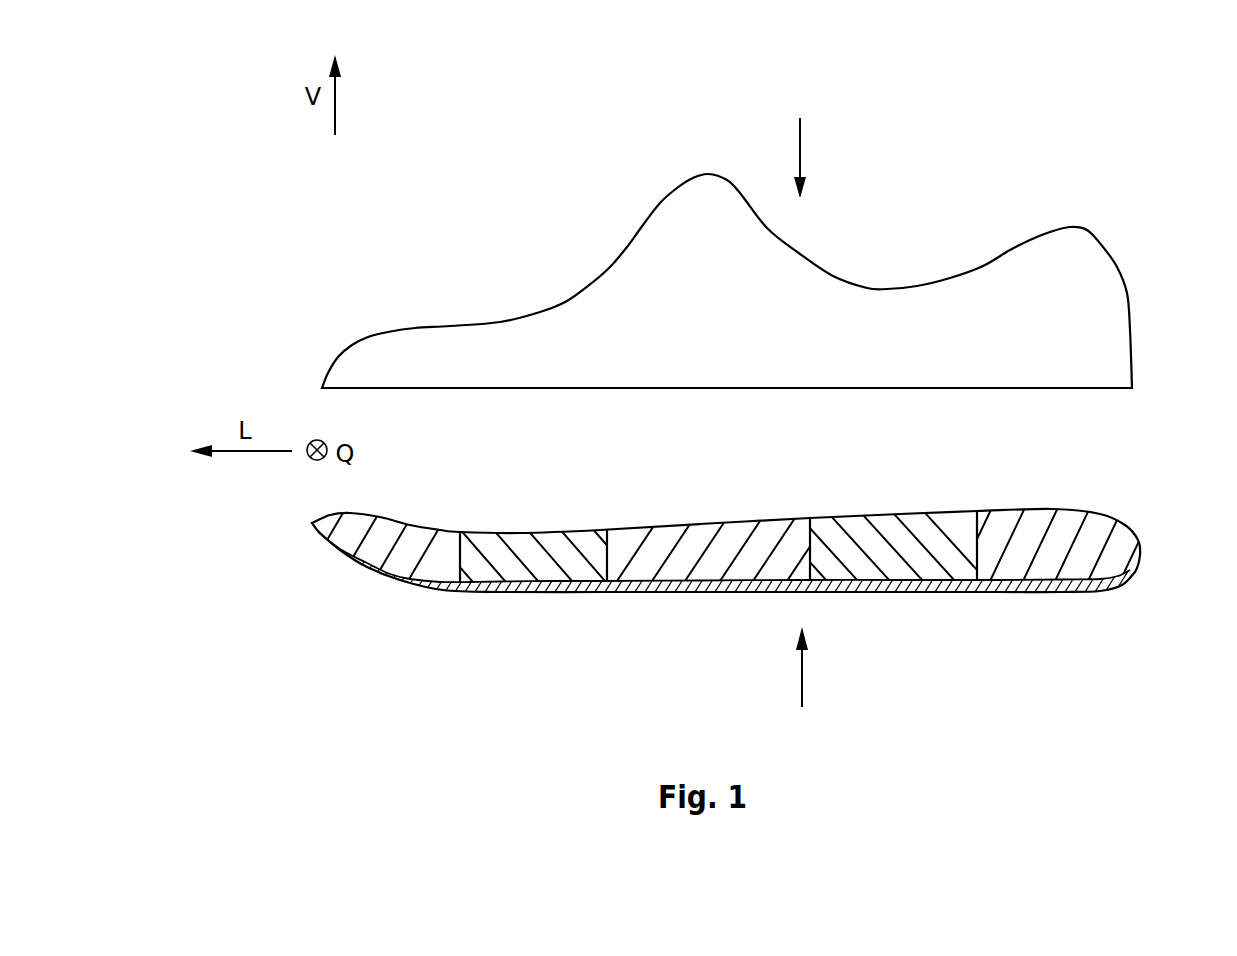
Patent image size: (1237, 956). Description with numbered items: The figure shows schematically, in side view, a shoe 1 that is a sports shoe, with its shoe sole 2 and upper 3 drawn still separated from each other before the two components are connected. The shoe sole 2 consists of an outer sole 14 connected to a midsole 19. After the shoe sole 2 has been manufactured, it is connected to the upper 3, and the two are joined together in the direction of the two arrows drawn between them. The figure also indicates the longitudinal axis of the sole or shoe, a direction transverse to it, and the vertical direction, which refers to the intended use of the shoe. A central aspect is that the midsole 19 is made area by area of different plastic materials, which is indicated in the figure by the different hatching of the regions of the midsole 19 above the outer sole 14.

The shoe 1 is at (1146, 495).
The shoe sole 2 is at (590, 616).
The upper 3 is at (1047, 275).
The outer sole 14 is at (965, 582).
The midsole 19 is at (1042, 558).